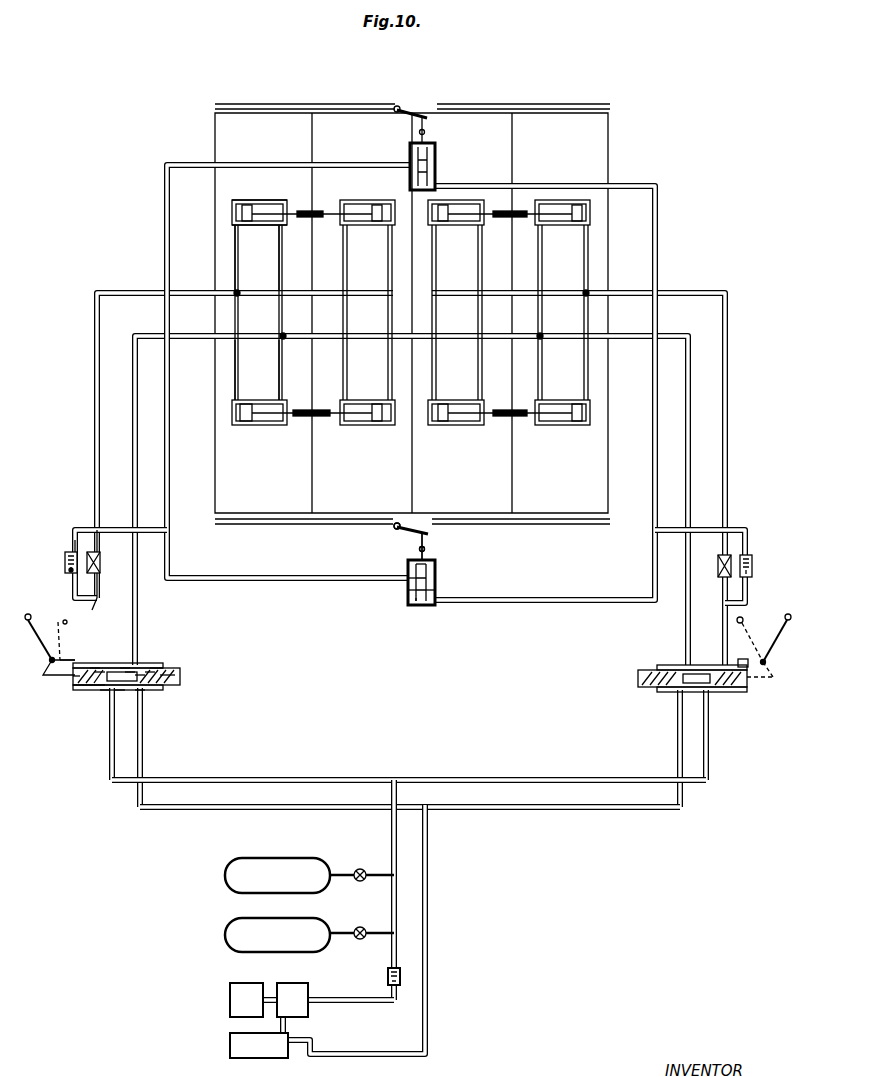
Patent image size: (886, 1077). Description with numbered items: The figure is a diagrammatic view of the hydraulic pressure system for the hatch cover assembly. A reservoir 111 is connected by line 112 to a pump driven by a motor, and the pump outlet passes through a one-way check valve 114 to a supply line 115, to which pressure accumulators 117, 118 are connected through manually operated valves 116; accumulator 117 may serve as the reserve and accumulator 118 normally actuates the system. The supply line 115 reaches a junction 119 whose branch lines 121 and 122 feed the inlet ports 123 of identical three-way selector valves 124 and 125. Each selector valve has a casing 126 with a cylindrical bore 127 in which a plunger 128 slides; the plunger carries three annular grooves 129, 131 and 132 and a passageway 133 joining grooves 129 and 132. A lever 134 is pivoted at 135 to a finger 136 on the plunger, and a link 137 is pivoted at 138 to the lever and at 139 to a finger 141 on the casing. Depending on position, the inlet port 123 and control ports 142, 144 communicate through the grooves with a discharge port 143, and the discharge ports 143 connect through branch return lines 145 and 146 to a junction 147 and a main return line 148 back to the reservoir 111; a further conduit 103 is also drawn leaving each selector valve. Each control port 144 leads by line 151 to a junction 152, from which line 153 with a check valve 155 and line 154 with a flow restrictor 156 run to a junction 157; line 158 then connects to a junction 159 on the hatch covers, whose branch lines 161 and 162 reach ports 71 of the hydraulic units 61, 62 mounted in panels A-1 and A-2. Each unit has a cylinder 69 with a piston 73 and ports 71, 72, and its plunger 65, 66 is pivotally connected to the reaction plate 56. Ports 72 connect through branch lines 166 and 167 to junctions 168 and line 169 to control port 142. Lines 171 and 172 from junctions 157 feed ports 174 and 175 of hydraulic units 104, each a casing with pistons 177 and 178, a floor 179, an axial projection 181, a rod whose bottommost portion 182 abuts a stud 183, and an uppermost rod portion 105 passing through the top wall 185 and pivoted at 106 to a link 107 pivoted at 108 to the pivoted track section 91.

The panel A-1 is at (215, 128).
The panel A-2 is at (353, 118).
The reaction plate 56 is at (312, 220).
The hydraulic unit 61 is at (264, 189).
The hydraulic unit 62 is at (380, 190).
The reciprocable plunger 65 is at (260, 205).
The reciprocable plunger 66 is at (352, 205).
The cylinder 69 is at (267, 225).
The control port 71 is at (232, 222).
The control port 72 is at (283, 222).
The piston 73 is at (232, 209).
The pivoted track section 91 is at (403, 108).
The conduit 103 is at (677, 692).
The hydraulic unit 104 is at (445, 159).
The piston rod 105 is at (430, 565).
The pivotal connection 106 is at (428, 553).
The link 107 is at (415, 545).
The pivotal connection 108 is at (405, 535).
The reservoir 111 is at (230, 1050).
The line 112 is at (292, 1025).
The one-way check valve 114 is at (387, 975).
The supply line 115 is at (392, 842).
The manually operated valve 116 is at (360, 927).
The pressure accumulator 117 is at (225, 935).
The pressure accumulator 118 is at (225, 878).
The junction 119 is at (395, 778).
The branch line 121 is at (300, 778).
The branch line 122 is at (560, 778).
The inlet port 123 is at (115, 690).
The three-way selector valve 124 is at (157, 664).
The three-way selector valve 125 is at (659, 656).
The casing 126 is at (130, 663).
The cylindrical bore 127 is at (95, 690).
The plunger 128 is at (180, 678).
The annular groove 129 is at (100, 690).
The annular groove 131 is at (160, 668).
The annular groove 132 is at (165, 672).
The passageway 133 is at (120, 690).
The lever 134 is at (46, 633).
The pivot 135 is at (75, 688).
The finger 136 is at (73, 678).
The link 137 is at (54, 637).
The pivot 138 is at (60, 660).
The pivot 139 is at (95, 660).
The finger 141 is at (98, 670).
The control port 142 is at (140, 670).
The discharge port 143 is at (140, 690).
The control port 144 is at (125, 660).
The branch return line 145 is at (250, 812).
The branch return line 146 is at (645, 812).
The junction 147 is at (432, 815).
The main return line 148 is at (430, 915).
The line 151 is at (97, 605).
The junction 152 is at (72, 540).
The line 153 is at (65, 545).
The line 154 is at (108, 540).
The check valve 155 is at (65, 568).
The flow restrictor 156 is at (100, 562).
The junction 157 is at (95, 528).
The line 158 is at (95, 358).
The junction 159 is at (238, 297).
The branch line 161 is at (235, 268).
The branch line 162 is at (235, 358).
The branch line 166 is at (280, 275).
The branch line 167 is at (282, 387).
The junction 168 is at (280, 340).
The line 169 is at (152, 333).
The line 171 is at (150, 528).
The line 172 is at (270, 578).
The port 174 is at (412, 590).
The port 175 is at (428, 605).
The piston 177 is at (414, 598).
The piston 178 is at (437, 575).
The floor 179 is at (422, 605).
The axial projection 181 is at (417, 605).
The bottommost portion of rod 182 is at (435, 590).
The stud 183 is at (430, 595).
The top wall 185 is at (408, 580).